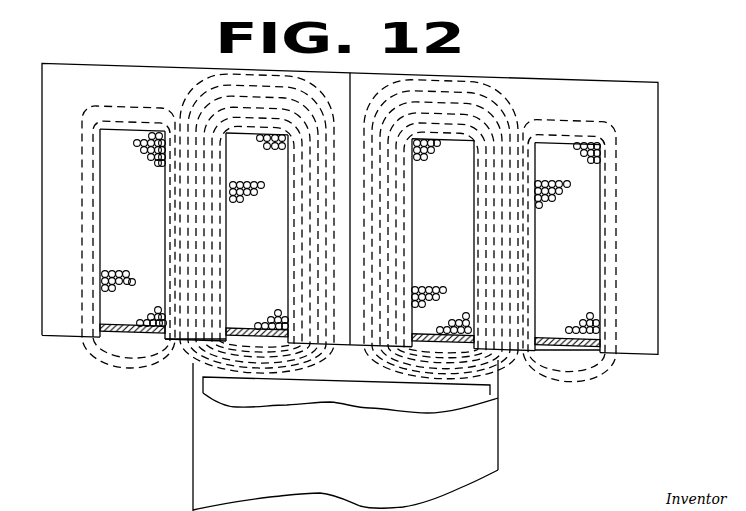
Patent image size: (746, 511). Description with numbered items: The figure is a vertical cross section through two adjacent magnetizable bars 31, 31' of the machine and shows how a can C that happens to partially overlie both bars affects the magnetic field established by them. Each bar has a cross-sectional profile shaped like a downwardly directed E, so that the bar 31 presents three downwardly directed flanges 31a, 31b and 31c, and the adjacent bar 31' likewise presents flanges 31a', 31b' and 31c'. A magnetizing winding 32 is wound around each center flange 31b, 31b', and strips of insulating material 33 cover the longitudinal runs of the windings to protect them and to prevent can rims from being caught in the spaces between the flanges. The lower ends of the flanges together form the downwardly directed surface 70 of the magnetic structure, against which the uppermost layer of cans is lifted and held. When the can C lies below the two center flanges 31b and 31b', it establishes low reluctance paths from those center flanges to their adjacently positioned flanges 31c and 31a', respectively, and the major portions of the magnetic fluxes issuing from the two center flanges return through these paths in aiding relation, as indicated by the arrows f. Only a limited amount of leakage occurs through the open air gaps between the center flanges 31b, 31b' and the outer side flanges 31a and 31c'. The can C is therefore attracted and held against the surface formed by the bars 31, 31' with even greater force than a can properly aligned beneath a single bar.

The bar 31 is at (196, 204).
The bar 31' is at (504, 214).
The side flange 31a is at (50, 231).
The center flange 31b is at (172, 235).
The side flange 31c is at (280, 239).
The side flange 31a' is at (421, 243).
The center flange 31b' is at (531, 247).
The side flange 31c' is at (658, 251).
The magnetizing winding 32 is at (147, 185).
The insulating material strip 33 is at (126, 327).
The downwardly directed surface 70 is at (178, 347).
The arrows f is at (83, 147).
The can C is at (345, 435).